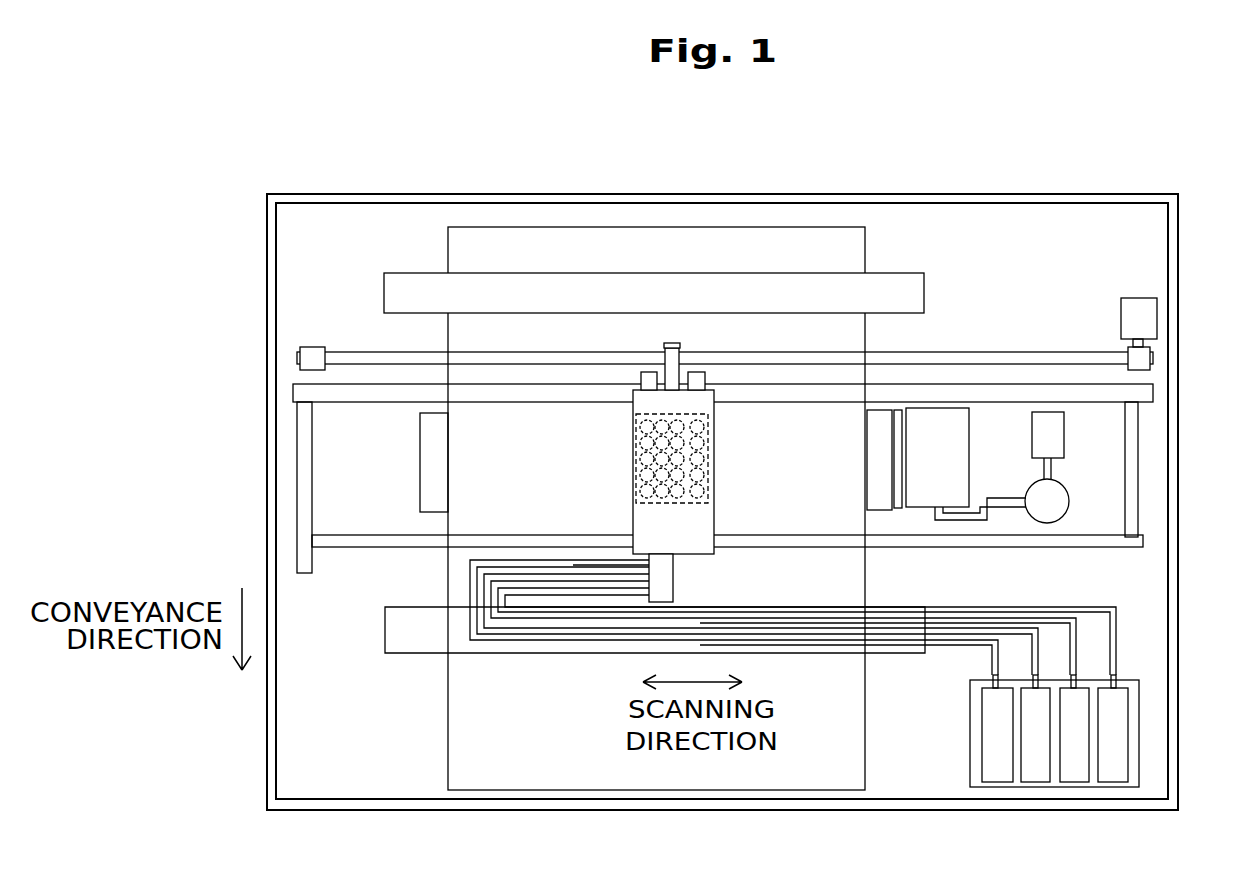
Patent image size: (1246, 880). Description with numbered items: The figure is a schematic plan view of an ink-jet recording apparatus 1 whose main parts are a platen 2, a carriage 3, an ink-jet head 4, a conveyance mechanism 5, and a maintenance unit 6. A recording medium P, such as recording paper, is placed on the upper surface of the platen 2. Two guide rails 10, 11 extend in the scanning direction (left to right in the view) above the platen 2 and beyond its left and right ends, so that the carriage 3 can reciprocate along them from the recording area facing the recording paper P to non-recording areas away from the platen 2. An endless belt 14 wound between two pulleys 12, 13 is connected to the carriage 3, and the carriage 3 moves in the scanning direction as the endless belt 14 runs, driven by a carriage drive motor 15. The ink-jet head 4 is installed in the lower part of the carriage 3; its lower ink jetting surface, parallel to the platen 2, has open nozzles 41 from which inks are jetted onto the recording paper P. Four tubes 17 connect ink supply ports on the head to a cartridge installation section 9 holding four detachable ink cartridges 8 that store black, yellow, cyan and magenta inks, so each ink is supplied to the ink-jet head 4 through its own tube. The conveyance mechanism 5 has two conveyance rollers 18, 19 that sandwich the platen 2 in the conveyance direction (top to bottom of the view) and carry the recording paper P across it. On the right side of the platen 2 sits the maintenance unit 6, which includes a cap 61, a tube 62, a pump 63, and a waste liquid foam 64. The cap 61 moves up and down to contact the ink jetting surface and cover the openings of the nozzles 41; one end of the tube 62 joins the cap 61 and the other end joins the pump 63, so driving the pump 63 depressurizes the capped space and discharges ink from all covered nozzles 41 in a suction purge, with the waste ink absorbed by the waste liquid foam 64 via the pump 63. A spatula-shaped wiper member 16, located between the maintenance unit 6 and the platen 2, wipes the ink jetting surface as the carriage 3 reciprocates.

The ink-jet recording apparatus 1 is at (1090, 163).
The platen 2 is at (440, 462).
The carriage 3 is at (697, 535).
The ink-jet head 4 is at (708, 468).
The nozzles 41 is at (708, 440).
The conveyance mechanism 5 is at (948, 273).
The maintenance unit 6 is at (1068, 497).
The ink cartridges 8 is at (1120, 760).
The cartridge installation section 9 is at (1135, 737).
The guide rail 10 is at (1073, 397).
The guide rail 11 is at (1125, 548).
The pulley 12 is at (1150, 350).
The pulley 13 is at (314, 346).
The endless belt 14 is at (992, 357).
The carriage drive motor 15 is at (1148, 319).
The wiper member 16 is at (897, 512).
The tubes 17 is at (580, 605).
The conveyance roller 18 is at (883, 284).
The conveyance roller 19 is at (410, 625).
The cap 61 is at (952, 488).
The tube 62 is at (1005, 506).
The pump 63 is at (1069, 500).
The waste liquid foam 64 is at (1040, 432).
The recording medium P is at (455, 731).